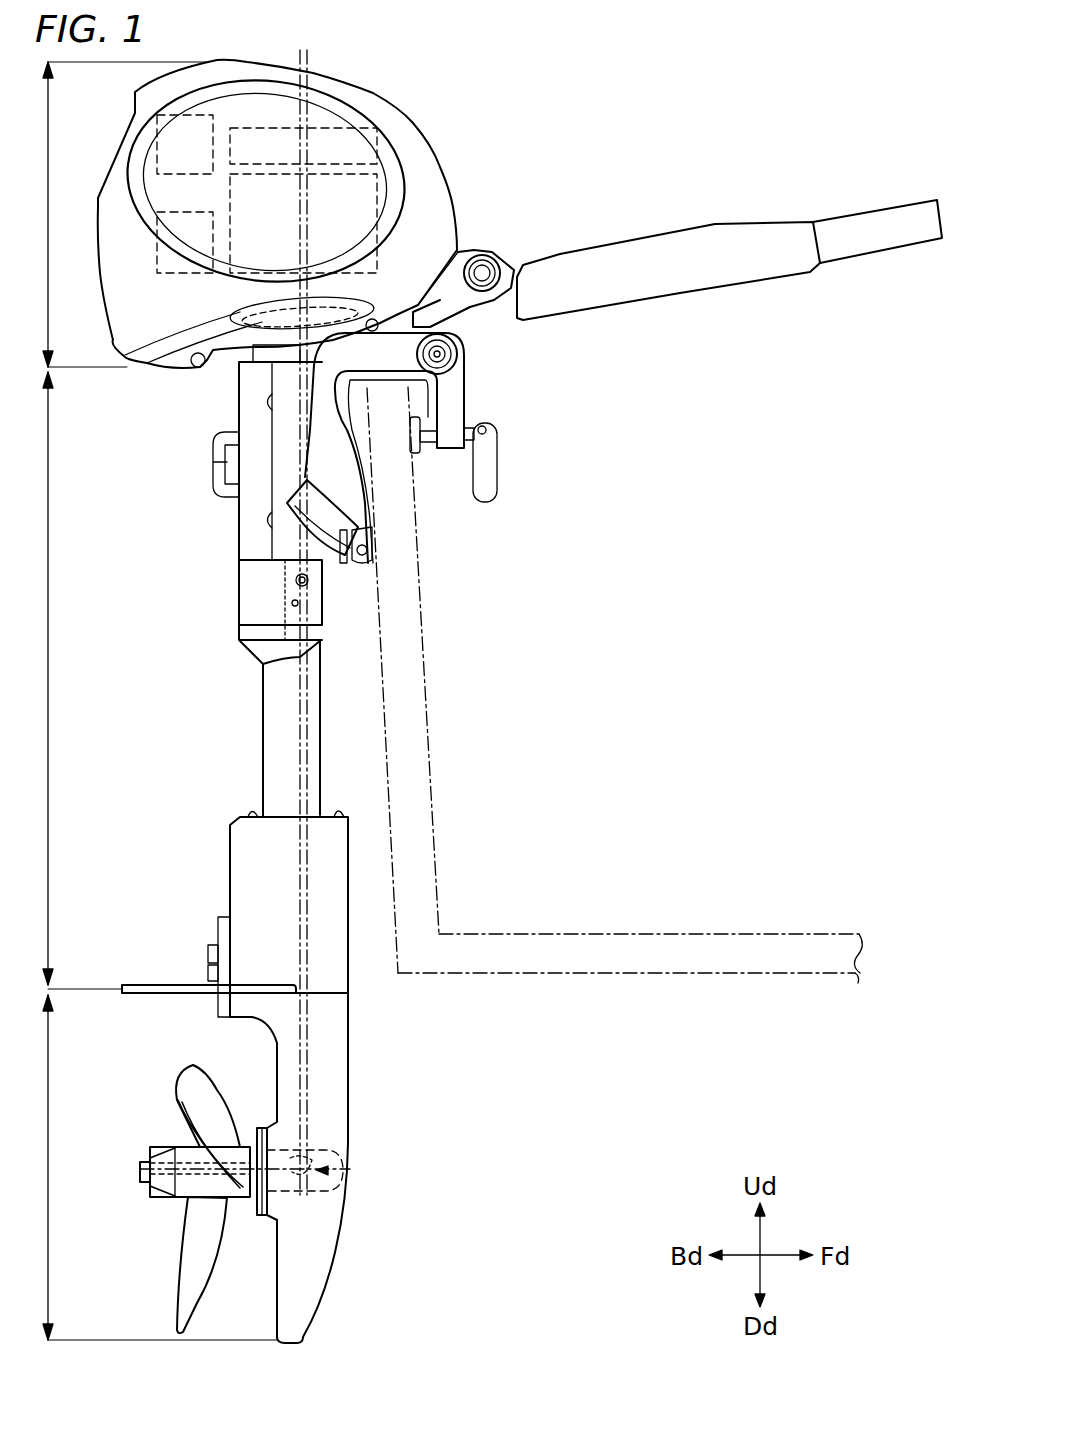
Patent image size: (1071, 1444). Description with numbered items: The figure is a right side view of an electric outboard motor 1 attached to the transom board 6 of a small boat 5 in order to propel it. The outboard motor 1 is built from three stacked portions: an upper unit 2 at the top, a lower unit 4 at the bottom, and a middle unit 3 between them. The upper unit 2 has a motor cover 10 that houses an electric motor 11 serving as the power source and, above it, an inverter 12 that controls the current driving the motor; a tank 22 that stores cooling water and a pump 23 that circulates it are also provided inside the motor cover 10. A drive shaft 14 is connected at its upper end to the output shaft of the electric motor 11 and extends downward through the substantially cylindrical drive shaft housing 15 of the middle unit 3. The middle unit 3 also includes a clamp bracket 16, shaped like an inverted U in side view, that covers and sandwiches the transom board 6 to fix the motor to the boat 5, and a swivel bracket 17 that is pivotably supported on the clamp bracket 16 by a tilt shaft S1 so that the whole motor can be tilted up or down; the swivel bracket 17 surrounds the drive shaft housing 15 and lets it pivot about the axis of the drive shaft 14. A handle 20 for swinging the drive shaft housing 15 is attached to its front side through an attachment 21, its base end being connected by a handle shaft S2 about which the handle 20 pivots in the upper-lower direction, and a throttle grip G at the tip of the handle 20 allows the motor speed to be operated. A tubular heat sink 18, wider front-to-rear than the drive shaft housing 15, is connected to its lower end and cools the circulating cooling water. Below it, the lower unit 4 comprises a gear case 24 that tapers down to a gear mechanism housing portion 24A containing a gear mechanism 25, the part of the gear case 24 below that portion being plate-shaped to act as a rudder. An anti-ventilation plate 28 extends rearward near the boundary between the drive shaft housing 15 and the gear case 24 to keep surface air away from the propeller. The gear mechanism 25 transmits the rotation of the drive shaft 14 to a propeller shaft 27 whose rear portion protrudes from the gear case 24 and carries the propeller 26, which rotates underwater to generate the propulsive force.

The outboard motor 1 is at (484, 121).
The upper unit 2 is at (117, 214).
The middle unit 3 is at (74, 680).
The lower unit 4 is at (152, 1167).
The boat 5 is at (737, 914).
The transom board 6 is at (421, 603).
The motor cover 10 is at (405, 110).
The electric motor 11 is at (385, 226).
The inverter 12 is at (304, 126).
The drive shaft 14 is at (297, 758).
The drive shaft housing 15 is at (270, 712).
The clamp bracket 16 is at (471, 412).
The swivel bracket 17 is at (250, 541).
The heat sink 18 is at (237, 857).
The handle 20 is at (707, 228).
The attachment 21 is at (466, 298).
The tank 22 is at (157, 130).
The pump 23 is at (157, 265).
The gear case 24 is at (349, 1063).
The gear mechanism housing portion 24A is at (343, 1183).
The gear mechanism 25 is at (349, 1152).
The propeller 26 is at (183, 1094).
The propeller shaft 27 is at (250, 1140).
The anti-ventilation plate 28 is at (140, 985).
The throttle grip G is at (877, 225).
The tilt shaft S1 is at (457, 362).
The handle shaft S2 is at (488, 262).